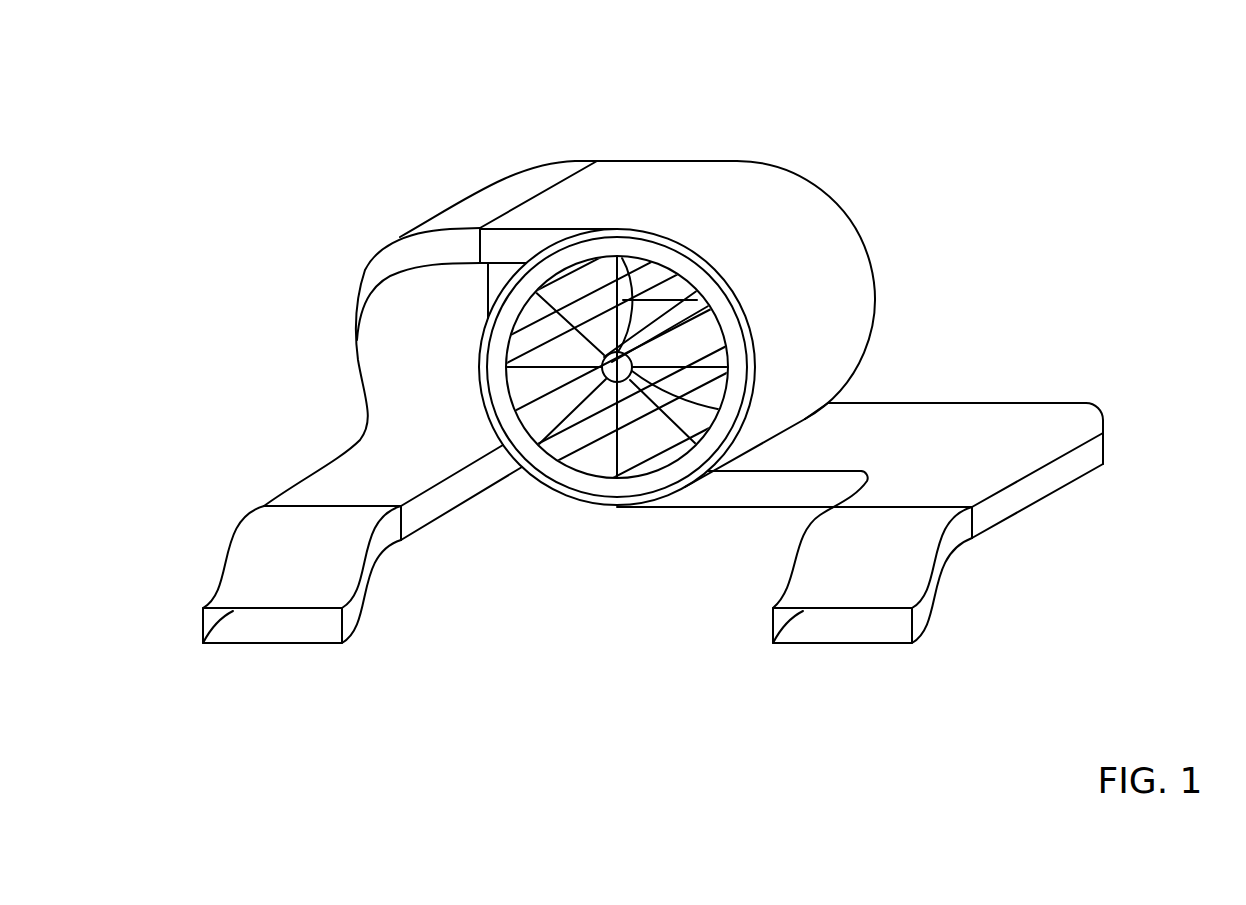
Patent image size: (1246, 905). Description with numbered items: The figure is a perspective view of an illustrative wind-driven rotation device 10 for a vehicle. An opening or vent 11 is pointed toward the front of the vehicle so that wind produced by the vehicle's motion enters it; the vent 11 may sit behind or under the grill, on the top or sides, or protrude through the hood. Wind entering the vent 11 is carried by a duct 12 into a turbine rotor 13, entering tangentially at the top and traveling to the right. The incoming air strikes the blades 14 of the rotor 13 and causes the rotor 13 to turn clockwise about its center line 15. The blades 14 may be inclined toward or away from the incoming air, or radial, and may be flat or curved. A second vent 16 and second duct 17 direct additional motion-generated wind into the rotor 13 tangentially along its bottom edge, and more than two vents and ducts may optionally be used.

The wind-driven rotation device 10 is at (996, 98).
The vent 11 is at (279, 628).
The duct 12 is at (483, 200).
The turbine rotor 13 is at (603, 488).
The blades 14 is at (575, 448).
The center line 15 is at (620, 375).
The second vent 16 is at (849, 628).
The second duct 17 is at (989, 418).